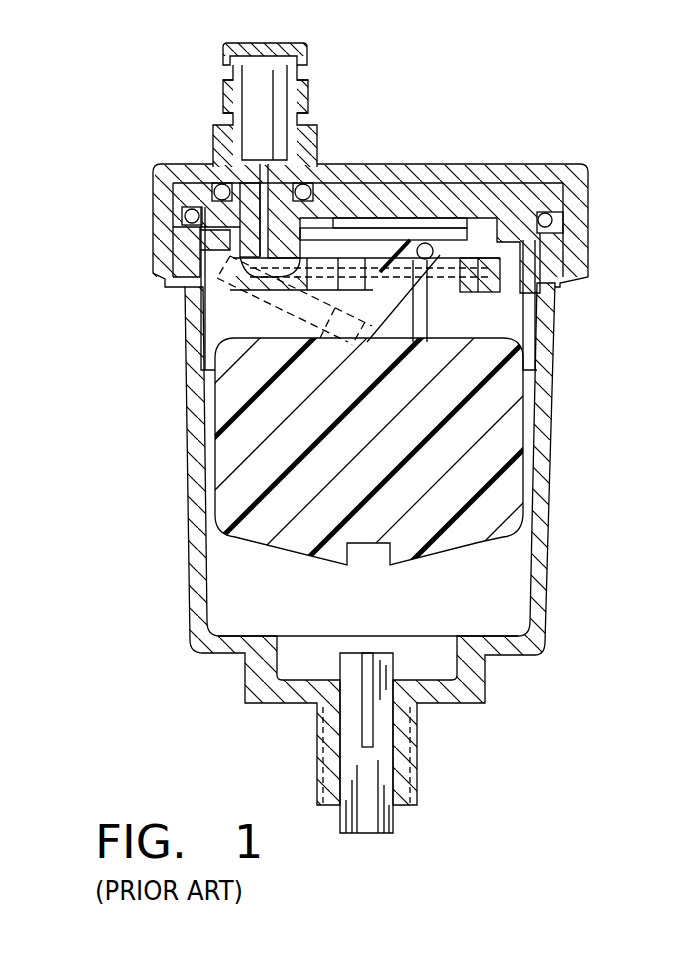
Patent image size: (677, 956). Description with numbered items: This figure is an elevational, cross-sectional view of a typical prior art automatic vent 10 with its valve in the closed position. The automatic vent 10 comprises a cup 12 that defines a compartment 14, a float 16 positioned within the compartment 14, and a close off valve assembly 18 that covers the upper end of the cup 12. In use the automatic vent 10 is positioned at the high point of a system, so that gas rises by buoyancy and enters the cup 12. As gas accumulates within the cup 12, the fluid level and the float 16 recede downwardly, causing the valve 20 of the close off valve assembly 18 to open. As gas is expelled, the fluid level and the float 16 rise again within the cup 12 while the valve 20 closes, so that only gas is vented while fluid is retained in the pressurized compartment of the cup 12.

The automatic vent 10 is at (418, 136).
The cup 12 is at (195, 503).
The compartment 14 is at (498, 584).
The float 16 is at (498, 443).
The close off valve assembly 18 is at (503, 170).
The valve 20 is at (485, 318).